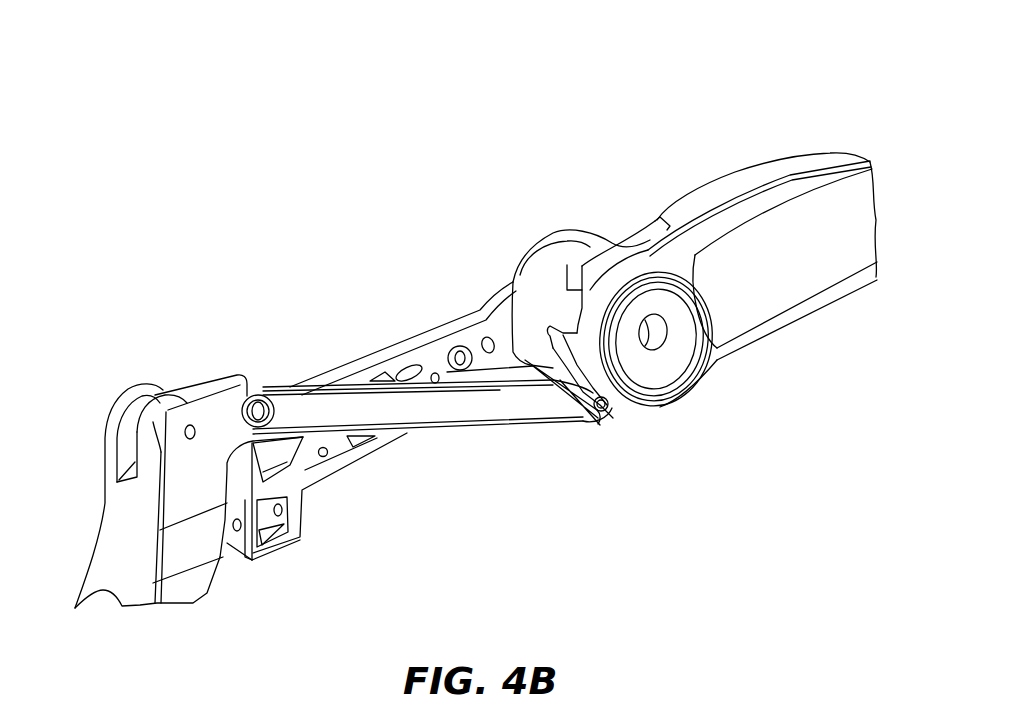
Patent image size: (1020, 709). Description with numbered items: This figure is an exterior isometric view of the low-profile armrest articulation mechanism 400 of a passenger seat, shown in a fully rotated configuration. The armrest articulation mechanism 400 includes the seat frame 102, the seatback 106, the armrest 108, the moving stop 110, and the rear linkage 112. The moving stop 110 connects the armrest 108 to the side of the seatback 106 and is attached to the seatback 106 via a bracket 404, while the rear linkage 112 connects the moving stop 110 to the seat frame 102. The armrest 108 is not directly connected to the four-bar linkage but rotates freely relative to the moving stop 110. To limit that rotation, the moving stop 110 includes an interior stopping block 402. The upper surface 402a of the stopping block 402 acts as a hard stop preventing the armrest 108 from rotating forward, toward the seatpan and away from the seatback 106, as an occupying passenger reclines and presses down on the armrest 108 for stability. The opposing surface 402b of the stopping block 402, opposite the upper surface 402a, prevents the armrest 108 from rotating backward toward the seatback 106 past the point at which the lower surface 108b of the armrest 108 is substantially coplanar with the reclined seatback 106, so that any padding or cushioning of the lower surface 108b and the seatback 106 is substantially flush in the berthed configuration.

The armrest articulation mechanism 400 is at (146, 81).
The seat frame 102 is at (215, 425).
The seatback 106 is at (389, 363).
The armrest 108 is at (781, 268).
The lower surface 108b is at (771, 173).
The moving stop 110 is at (567, 245).
The rear linkage 112 is at (470, 411).
The stopping block 402 is at (567, 305).
The upper surface 402a is at (579, 271).
The opposing surface 402b is at (567, 340).
The bracket 404 is at (513, 352).